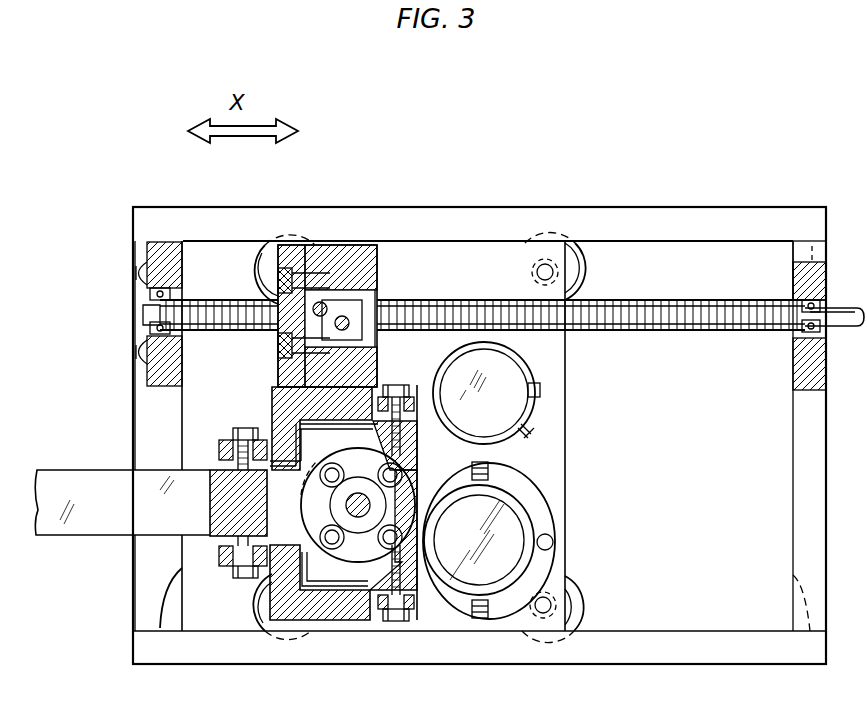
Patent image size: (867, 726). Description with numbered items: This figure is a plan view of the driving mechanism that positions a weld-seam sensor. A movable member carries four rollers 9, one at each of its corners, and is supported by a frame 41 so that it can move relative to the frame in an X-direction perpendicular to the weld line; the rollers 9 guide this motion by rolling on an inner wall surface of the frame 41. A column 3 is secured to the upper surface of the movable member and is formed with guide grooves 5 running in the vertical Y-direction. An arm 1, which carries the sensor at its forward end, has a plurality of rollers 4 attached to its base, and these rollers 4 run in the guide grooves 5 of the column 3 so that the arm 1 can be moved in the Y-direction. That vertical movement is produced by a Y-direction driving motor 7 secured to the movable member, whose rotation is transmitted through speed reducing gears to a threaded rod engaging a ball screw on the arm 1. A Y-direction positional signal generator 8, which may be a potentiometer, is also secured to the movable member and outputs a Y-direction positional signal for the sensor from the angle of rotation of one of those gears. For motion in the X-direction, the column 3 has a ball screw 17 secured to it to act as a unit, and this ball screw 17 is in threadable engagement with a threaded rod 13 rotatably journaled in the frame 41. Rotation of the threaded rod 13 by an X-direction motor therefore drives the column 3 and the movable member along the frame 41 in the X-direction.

The arm 1 is at (95, 528).
The column 3 is at (268, 388).
The rollers 4 is at (405, 386).
The guide grooves 5 is at (370, 390).
The Y-direction driving motor 7 is at (505, 516).
The Y-direction positional signal generator 8 is at (512, 366).
The rollers 9 is at (258, 263).
The threaded rod 13 is at (708, 311).
The ball screw 17 is at (378, 307).
The frame 41 is at (762, 216).